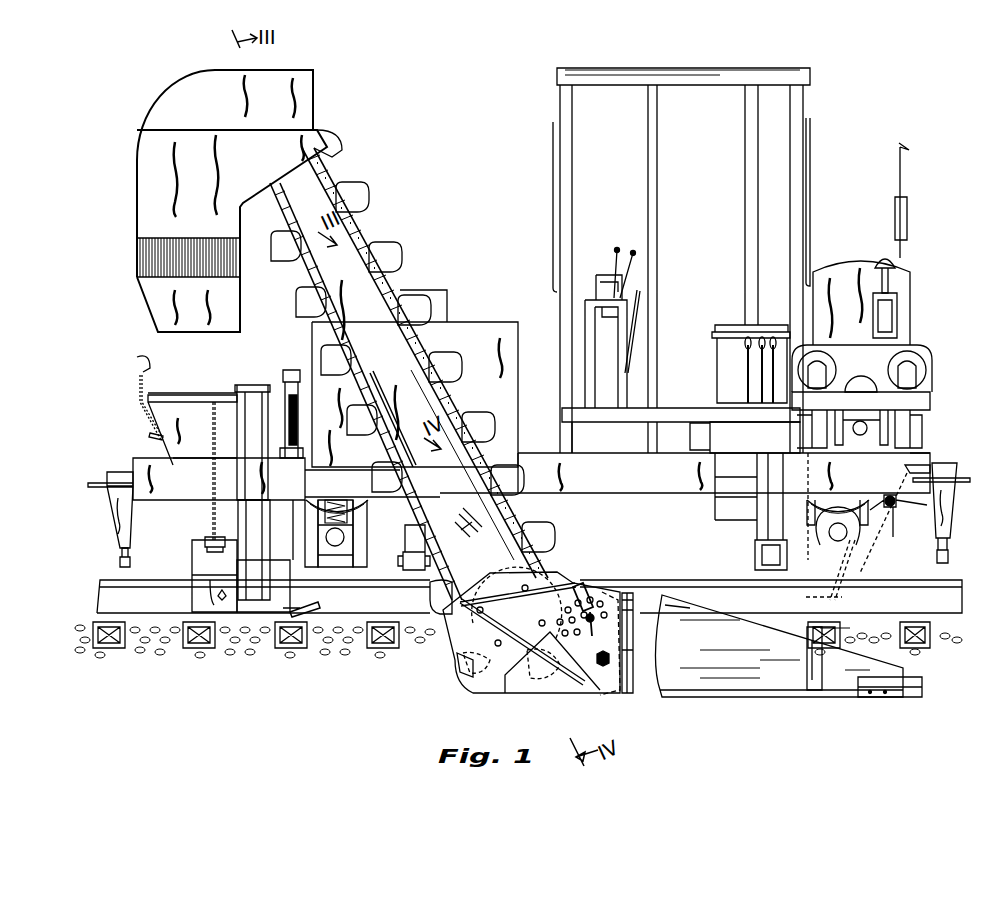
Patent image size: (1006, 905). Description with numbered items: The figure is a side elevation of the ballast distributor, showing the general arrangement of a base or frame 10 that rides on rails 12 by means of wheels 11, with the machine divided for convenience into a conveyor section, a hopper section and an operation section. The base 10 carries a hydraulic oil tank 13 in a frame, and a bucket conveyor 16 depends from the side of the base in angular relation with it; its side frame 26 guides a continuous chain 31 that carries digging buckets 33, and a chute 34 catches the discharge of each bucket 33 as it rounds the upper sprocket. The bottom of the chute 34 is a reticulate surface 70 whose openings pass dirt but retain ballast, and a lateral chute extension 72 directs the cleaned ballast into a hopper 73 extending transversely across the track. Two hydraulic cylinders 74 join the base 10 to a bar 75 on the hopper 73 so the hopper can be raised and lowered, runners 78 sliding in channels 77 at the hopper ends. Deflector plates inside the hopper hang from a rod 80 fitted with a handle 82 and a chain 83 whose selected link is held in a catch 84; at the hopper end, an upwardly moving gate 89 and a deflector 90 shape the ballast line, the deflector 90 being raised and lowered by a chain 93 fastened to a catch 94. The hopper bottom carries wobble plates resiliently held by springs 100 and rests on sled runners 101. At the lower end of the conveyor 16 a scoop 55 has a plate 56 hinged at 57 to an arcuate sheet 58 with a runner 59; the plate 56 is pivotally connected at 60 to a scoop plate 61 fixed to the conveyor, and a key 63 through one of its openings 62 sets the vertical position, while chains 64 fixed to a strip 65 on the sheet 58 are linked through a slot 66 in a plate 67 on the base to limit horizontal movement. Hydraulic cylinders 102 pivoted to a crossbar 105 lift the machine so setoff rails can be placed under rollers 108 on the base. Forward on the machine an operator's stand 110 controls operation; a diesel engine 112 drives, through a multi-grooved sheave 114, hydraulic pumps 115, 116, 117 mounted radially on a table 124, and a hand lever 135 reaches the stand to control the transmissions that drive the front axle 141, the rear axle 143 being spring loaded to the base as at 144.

The base 10 is at (170, 495).
The wheels 11 is at (378, 560).
The rails 12 is at (150, 585).
The hydraulic oil tank 13 is at (447, 305).
The bucket conveyor 16 is at (524, 325).
The side frame 26 is at (400, 355).
The continuous chain 31 is at (272, 232).
The digging bucket 33 is at (350, 186).
The chute 34 is at (310, 100).
The scoop 55 is at (779, 646).
The plate 56 is at (610, 590).
The hinge 57 is at (633, 620).
The arcuate sheet 58 is at (700, 615).
The runner 59 is at (922, 682).
The pivot connection 60 is at (605, 666).
The scoop plate 61 is at (555, 577).
The openings 62 is at (582, 627).
The key 63 is at (597, 614).
The chains 64 is at (806, 597).
The strip 65 is at (822, 660).
The slot 66 is at (920, 458).
The plate 67 is at (892, 488).
The reticulate surface 70 is at (137, 263).
The lateral chute extension 72 is at (150, 310).
The hopper 73 is at (192, 430).
The hydraulic cylinders 74 is at (299, 412).
The bar 75 is at (292, 370).
The channels 77 is at (270, 560).
The runners 78 is at (265, 380).
The rod 80 is at (175, 391).
The handle 82 is at (140, 360).
The chain 83 is at (142, 389).
The catch 84 is at (150, 437).
The gate 89 is at (204, 538).
The deflector 90 is at (192, 601).
The chain 93 is at (212, 478).
The catch 94 is at (216, 399).
The spring 100 is at (263, 586).
The sled runners 101 is at (312, 612).
The hydraulic cylinders 102 is at (118, 545).
The crossbar 105 is at (118, 563).
The rollers 108 is at (412, 570).
The operator's stand 110 is at (660, 395).
The diesel engine 112 is at (910, 282).
The multi-grooved sheave 114 is at (875, 372).
The hydraulic pump 115 is at (822, 365).
The hydraulic pump 116 is at (912, 360).
The hydraulic pump 117 is at (862, 435).
The table 124 is at (922, 405).
The lever 135 is at (777, 325).
The front axle 141 is at (838, 541).
The rear axle 143 is at (337, 546).
The spring loading 144 is at (340, 500).